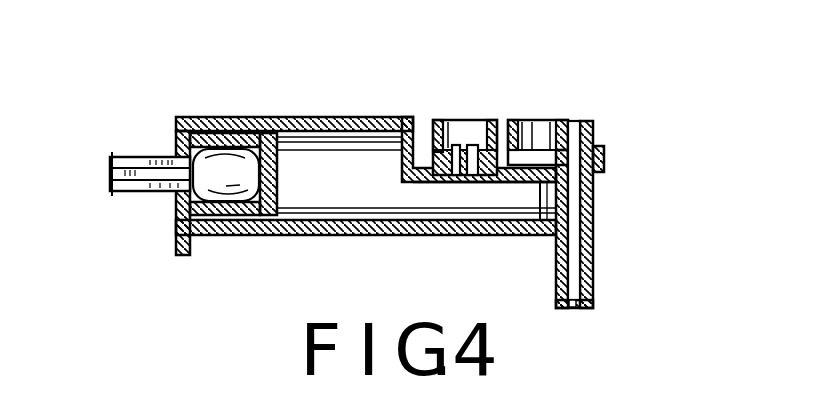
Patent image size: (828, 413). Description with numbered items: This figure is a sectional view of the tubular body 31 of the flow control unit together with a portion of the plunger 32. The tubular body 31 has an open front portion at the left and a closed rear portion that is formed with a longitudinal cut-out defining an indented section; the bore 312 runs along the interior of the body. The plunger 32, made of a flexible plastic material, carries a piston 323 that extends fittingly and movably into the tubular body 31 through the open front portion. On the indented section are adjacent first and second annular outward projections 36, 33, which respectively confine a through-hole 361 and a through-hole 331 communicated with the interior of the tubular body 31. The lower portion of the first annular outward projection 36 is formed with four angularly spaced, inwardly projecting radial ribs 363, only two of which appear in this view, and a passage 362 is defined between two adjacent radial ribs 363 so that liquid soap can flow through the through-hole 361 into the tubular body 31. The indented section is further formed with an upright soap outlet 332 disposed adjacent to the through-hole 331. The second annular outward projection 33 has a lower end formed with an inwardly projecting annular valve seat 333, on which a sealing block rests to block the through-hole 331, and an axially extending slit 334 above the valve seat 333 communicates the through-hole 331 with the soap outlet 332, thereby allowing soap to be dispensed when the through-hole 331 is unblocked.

The tubular body 31 is at (346, 117).
The inner bore 312 is at (342, 195).
The plunger 32 is at (148, 160).
The piston 323 is at (270, 117).
The second annular outward projection 33 is at (518, 150).
The through-hole 331 is at (540, 190).
The soap outlet 332 is at (593, 183).
The annular valve seat 333 is at (557, 143).
The axially extending slit 334 is at (595, 133).
The first annular outward projection 36 is at (497, 135).
The through-hole 361 is at (463, 183).
The passage 362 is at (418, 140).
The radial ribs 363 is at (468, 145).